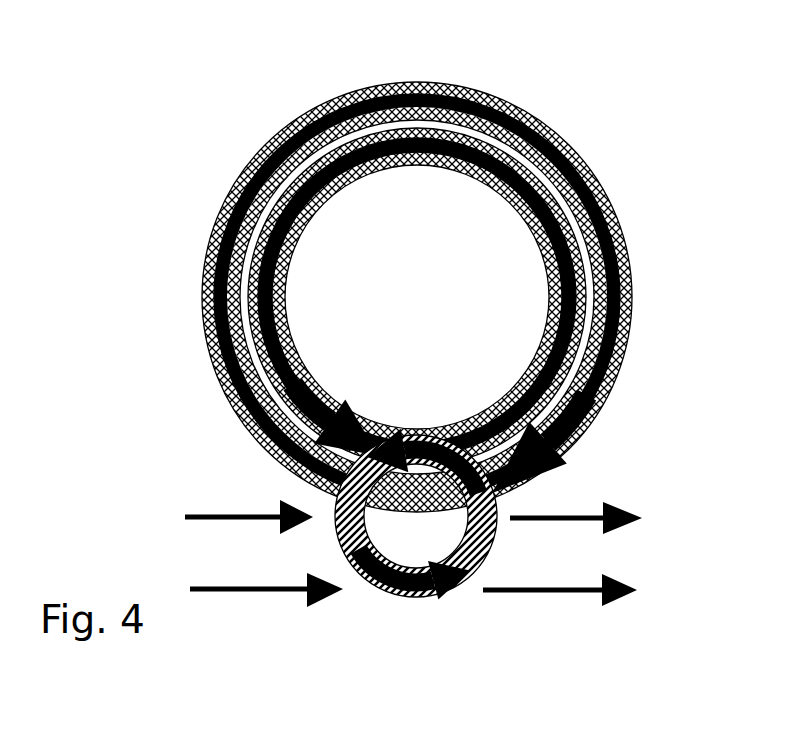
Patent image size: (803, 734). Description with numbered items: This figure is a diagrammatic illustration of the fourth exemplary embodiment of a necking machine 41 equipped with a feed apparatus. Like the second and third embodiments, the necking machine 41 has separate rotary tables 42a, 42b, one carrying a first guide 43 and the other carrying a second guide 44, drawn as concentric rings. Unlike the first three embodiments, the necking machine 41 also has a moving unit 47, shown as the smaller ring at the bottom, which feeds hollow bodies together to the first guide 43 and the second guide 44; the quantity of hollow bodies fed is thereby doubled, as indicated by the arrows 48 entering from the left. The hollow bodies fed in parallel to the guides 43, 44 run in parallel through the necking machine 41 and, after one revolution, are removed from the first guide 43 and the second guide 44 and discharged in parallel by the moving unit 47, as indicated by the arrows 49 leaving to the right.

The necking machine 41 is at (548, 80).
The rotary table 42a is at (583, 157).
The rotary table 42b is at (537, 360).
The first guide 43 is at (613, 250).
The second guide 44 is at (553, 318).
The moving unit 47 is at (462, 580).
The arrows 48 is at (218, 515).
The arrows 49 is at (568, 513).